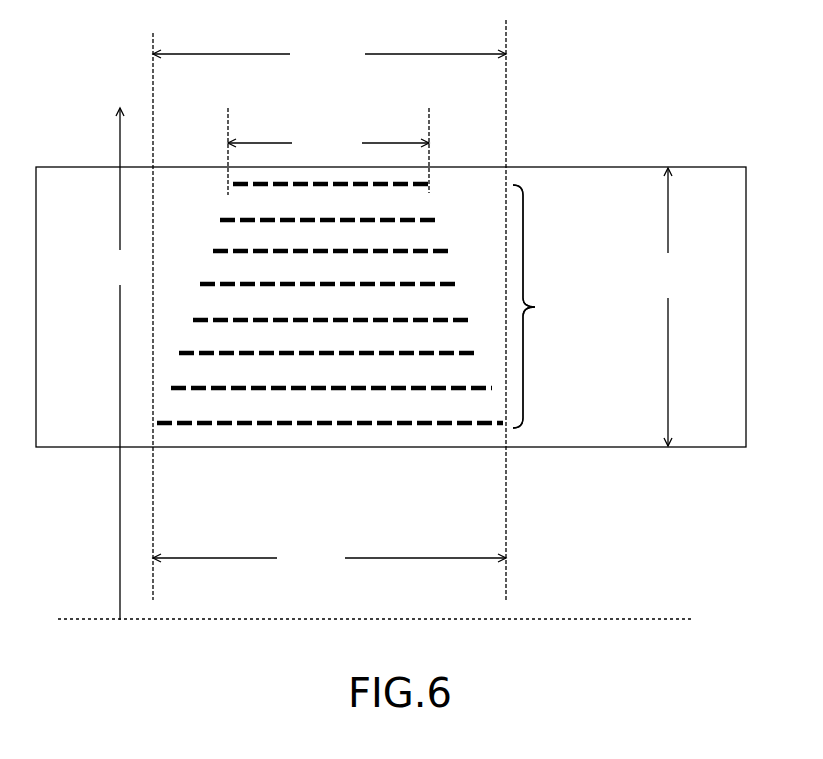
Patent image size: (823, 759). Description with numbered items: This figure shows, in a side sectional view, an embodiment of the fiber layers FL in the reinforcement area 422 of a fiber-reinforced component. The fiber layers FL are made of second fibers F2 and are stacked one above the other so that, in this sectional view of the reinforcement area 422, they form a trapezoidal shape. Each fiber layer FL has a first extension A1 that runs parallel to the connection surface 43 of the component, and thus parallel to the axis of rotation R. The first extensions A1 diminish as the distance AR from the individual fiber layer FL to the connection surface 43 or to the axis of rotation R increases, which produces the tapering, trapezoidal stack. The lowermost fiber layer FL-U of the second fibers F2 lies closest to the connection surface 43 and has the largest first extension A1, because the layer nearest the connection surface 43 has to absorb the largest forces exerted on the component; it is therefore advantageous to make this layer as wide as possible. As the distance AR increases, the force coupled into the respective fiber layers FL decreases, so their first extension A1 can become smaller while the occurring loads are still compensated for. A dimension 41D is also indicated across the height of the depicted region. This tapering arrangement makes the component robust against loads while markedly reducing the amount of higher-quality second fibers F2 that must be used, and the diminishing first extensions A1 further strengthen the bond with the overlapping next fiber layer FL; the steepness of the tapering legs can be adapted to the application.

The connection surface 43 is at (433, 448).
The reinforcement area 422 is at (329, 53).
The first extension A1 is at (329, 350).
The distance AR is at (121, 364).
The height of light emitting region 41D is at (670, 307).
The axis of rotation R is at (399, 620).
The fiber layers FL is at (372, 306).
The second fibers F2 is at (543, 306).
The lowermost fiber layer FL-U is at (356, 431).